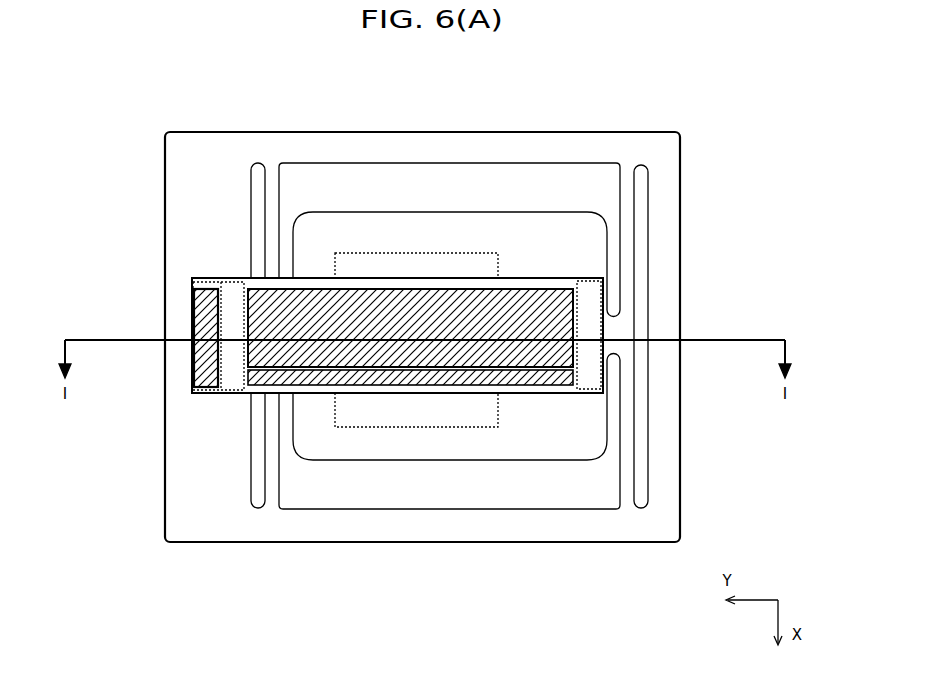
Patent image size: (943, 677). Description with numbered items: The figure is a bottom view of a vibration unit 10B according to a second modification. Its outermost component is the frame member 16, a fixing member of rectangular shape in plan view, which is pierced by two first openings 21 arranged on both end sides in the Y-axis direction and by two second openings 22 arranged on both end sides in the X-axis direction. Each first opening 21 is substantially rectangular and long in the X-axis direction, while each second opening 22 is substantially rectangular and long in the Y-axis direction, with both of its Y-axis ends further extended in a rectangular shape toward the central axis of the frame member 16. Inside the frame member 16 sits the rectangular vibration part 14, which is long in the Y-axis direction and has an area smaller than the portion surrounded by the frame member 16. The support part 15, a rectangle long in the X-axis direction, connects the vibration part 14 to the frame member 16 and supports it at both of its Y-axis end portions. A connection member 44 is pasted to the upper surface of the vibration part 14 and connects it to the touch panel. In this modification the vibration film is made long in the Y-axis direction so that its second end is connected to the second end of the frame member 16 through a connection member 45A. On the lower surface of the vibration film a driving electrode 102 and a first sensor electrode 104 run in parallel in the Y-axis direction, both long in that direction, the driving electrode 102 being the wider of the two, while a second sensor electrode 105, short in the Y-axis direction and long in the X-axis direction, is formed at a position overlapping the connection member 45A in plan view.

The vibration unit 10B is at (184, 105).
The vibration part 14 is at (525, 462).
The support part 15 is at (635, 222).
The frame member 16 is at (413, 525).
The first opening 21 is at (258, 166).
The second opening 22 is at (557, 182).
The connection member 44 is at (417, 255).
The connection member 45A is at (595, 372).
The driving electrode 102 is at (248, 362).
The first sensor electrode 104 is at (248, 378).
The second sensor electrode 105 is at (198, 300).